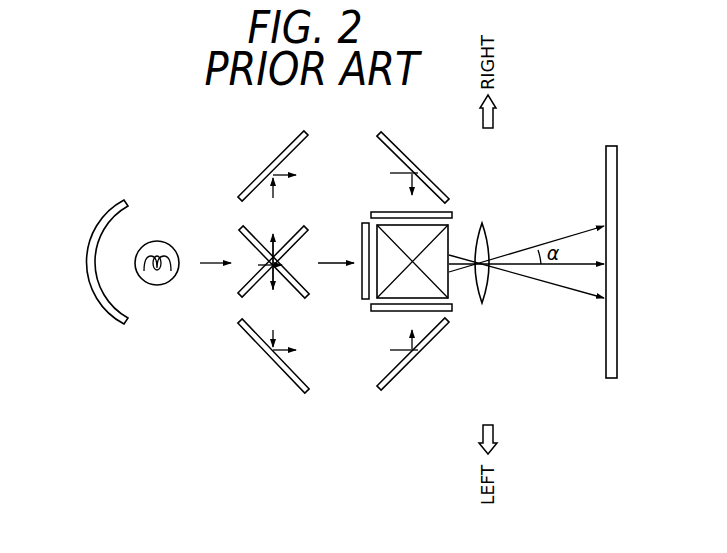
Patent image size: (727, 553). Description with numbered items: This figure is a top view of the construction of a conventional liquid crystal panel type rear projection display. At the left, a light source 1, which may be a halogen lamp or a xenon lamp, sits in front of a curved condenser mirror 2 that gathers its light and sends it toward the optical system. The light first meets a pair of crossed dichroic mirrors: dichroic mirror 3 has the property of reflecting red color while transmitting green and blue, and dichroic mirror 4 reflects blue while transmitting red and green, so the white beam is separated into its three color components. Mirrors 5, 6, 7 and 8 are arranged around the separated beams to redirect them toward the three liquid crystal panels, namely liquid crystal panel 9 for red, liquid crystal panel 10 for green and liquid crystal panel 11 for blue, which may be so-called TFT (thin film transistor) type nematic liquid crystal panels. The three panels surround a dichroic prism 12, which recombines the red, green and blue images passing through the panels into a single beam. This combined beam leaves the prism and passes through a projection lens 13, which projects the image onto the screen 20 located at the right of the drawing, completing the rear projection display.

The light source 1 is at (178, 248).
The condenser mirror 2 is at (110, 202).
The dichroic mirror 3 is at (240, 237).
The dichroic mirror 4 is at (238, 293).
The mirror 5 is at (288, 145).
The mirror 6 is at (408, 153).
The mirror 7 is at (253, 343).
The mirror 8 is at (427, 347).
The liquid crystal panel 9 is at (375, 208).
The liquid crystal panel 10 is at (361, 229).
The liquid crystal panel 11 is at (373, 313).
The dichroic prism 12 is at (458, 290).
The projection lens 13 is at (487, 223).
The screen 20 is at (610, 380).